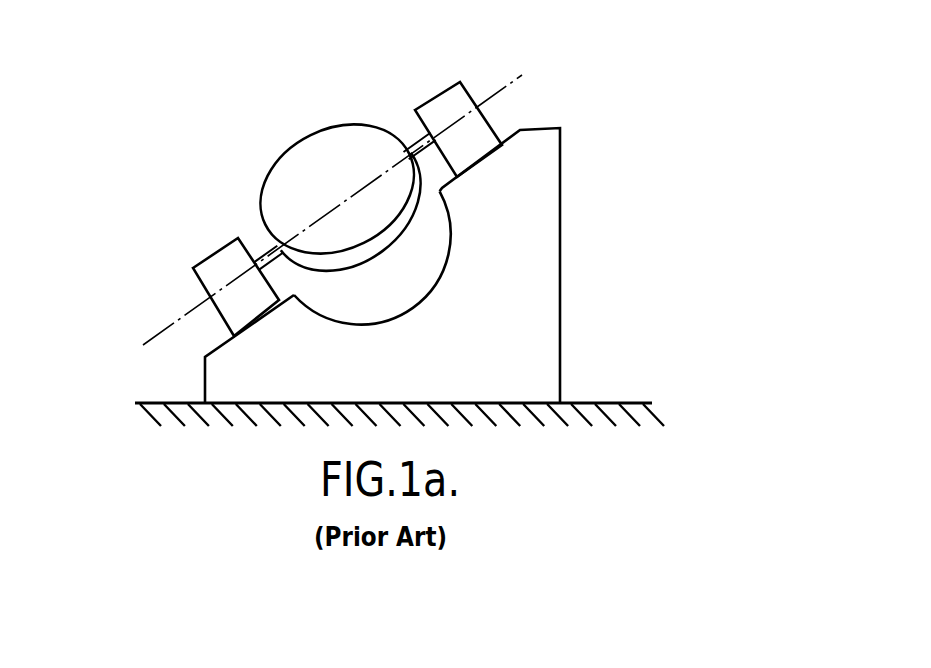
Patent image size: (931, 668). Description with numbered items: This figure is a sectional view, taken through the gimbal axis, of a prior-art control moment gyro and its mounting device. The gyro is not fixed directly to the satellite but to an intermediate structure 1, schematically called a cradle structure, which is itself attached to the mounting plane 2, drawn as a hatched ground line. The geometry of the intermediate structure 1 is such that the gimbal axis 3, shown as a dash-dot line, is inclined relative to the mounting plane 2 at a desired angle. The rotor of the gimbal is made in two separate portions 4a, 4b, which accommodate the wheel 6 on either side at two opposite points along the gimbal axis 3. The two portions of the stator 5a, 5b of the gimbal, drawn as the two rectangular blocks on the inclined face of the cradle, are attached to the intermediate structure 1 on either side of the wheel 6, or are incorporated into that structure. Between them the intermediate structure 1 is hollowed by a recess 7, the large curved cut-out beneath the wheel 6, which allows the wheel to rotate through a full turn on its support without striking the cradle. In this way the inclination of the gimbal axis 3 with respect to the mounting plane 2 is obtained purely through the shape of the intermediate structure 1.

The intermediate structure 1 is at (527, 238).
The mounting plane 2 is at (609, 401).
The gimbal axis 3 is at (508, 85).
The rotor portion 4a is at (263, 252).
The rotor portion 4b is at (409, 148).
The stator portion 5a is at (210, 255).
The stator portion 5b is at (443, 91).
The wheel 6 is at (317, 173).
The recess 7 is at (400, 296).